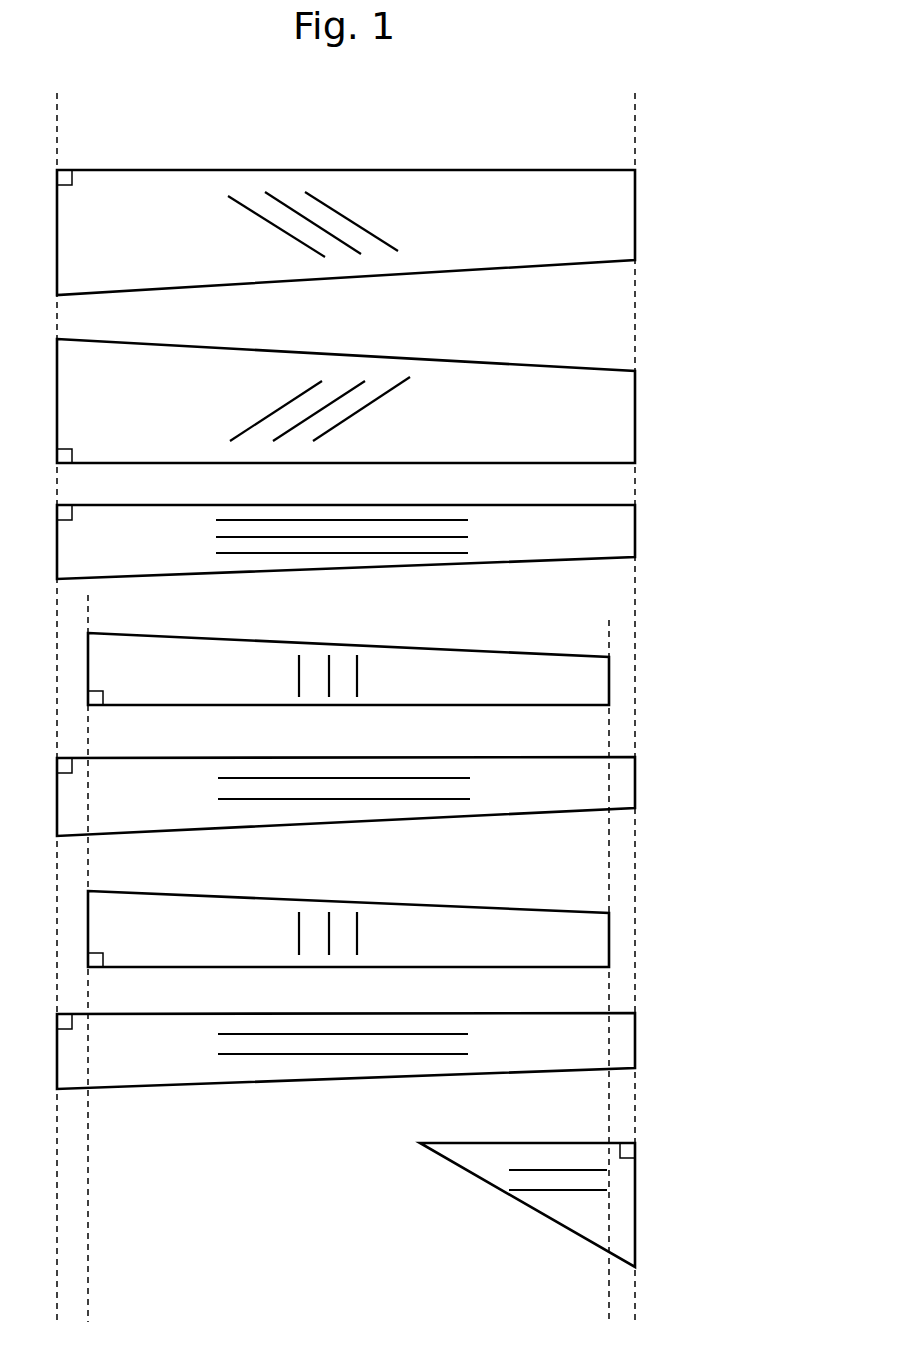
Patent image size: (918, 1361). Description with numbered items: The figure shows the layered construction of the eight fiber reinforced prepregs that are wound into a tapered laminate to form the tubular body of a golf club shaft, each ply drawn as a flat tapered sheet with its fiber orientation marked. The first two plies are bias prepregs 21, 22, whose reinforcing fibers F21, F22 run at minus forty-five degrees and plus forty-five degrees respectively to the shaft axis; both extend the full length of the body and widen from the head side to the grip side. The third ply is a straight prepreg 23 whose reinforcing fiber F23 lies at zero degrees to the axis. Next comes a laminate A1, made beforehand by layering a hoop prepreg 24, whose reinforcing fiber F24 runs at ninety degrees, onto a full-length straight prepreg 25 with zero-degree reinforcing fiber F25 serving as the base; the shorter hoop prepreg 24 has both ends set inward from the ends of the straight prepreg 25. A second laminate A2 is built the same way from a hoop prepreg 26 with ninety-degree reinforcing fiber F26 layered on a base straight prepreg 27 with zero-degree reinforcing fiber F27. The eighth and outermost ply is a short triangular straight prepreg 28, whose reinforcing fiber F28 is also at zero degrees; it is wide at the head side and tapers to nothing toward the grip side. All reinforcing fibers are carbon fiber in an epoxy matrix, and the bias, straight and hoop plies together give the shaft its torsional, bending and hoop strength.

The bias prepreg 21 is at (407, 214).
The bias prepreg 22 is at (407, 381).
The straight prepreg 23 is at (407, 524).
The hoop prepreg 24 is at (423, 652).
The straight prepreg 25 is at (407, 775).
The hoop prepreg 26 is at (423, 908).
The straight prepreg 27 is at (407, 1067).
The straight prepreg 28 is at (548, 1201).
The reinforcing fiber F21 is at (343, 213).
The reinforcing fiber F22 is at (385, 390).
The reinforcing fiber F23 is at (328, 520).
The reinforcing fiber F24 is at (358, 668).
The reinforcing fiber F25 is at (340, 778).
The reinforcing fiber F26 is at (357, 930).
The reinforcing fiber F27 is at (283, 1056).
The reinforcing fiber F28 is at (527, 1170).
The laminate A1 is at (432, 715).
The laminate A2 is at (432, 996).